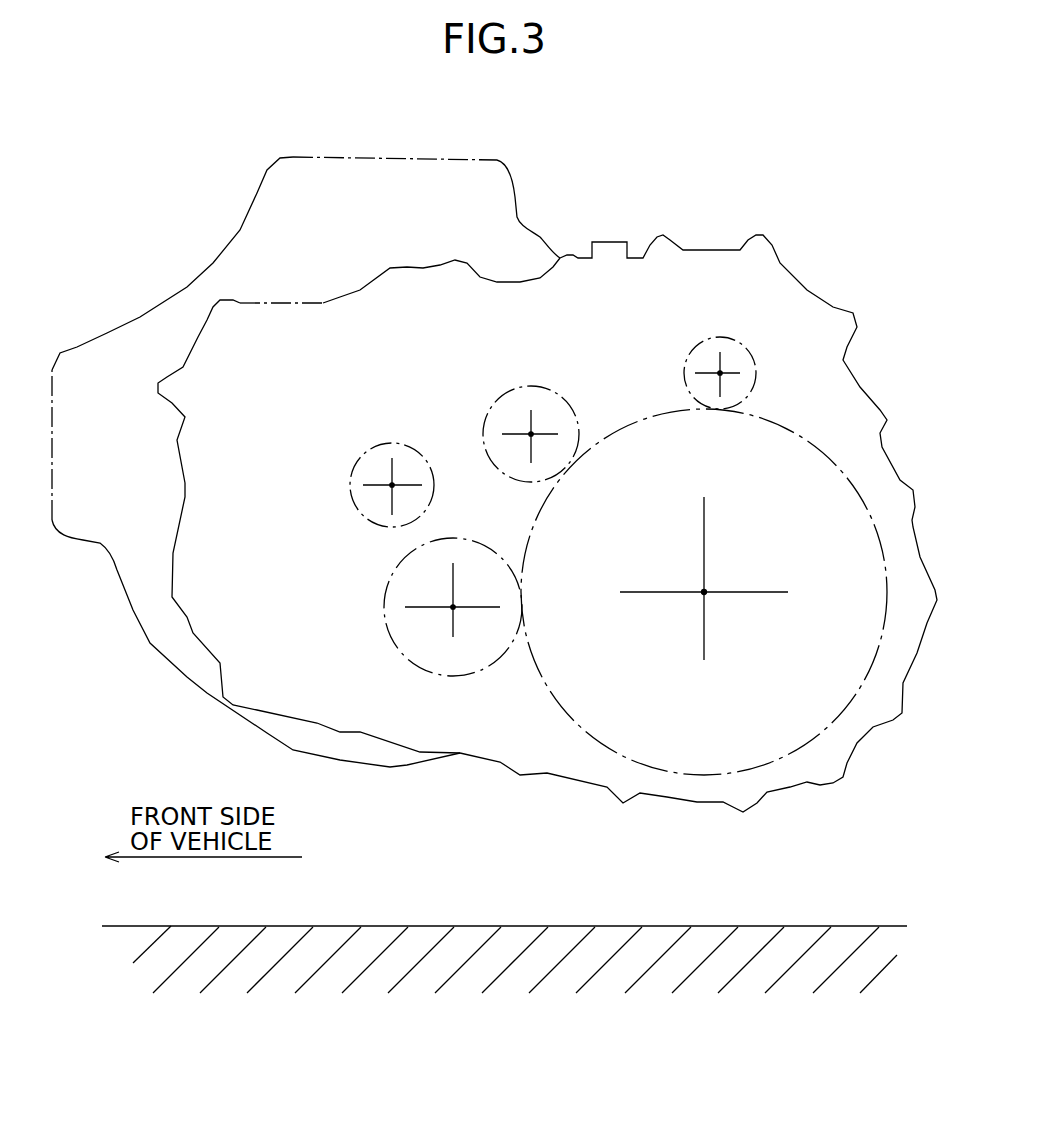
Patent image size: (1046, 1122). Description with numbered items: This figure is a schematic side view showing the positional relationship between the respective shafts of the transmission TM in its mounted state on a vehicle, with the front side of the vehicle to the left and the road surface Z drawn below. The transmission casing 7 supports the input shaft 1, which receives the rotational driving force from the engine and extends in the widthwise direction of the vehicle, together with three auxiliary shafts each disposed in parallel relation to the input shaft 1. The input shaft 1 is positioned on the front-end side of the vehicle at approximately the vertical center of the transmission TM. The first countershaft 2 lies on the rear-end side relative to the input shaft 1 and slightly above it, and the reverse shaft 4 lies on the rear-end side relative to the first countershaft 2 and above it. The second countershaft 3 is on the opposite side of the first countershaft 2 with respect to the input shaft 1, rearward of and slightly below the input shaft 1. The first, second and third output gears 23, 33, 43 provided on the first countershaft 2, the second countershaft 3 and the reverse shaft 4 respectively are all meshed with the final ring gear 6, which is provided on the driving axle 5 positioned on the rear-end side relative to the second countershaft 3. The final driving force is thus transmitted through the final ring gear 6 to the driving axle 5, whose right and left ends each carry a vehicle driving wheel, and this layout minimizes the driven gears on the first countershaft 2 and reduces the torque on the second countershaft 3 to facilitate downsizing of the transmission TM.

The transmission TM is at (187, 283).
The input shaft 1 is at (392, 485).
The first countershaft 2 is at (531, 434).
The first output gear 23 is at (499, 399).
The second countershaft 3 is at (453, 607).
The second output gear 33 is at (458, 537).
The reverse shaft 4 is at (720, 373).
The third output gear 43 is at (714, 340).
The driving axle 5 is at (704, 592).
The final ring gear 6 is at (850, 478).
The transmission casing 7 is at (518, 203).
The road surface Z is at (720, 926).